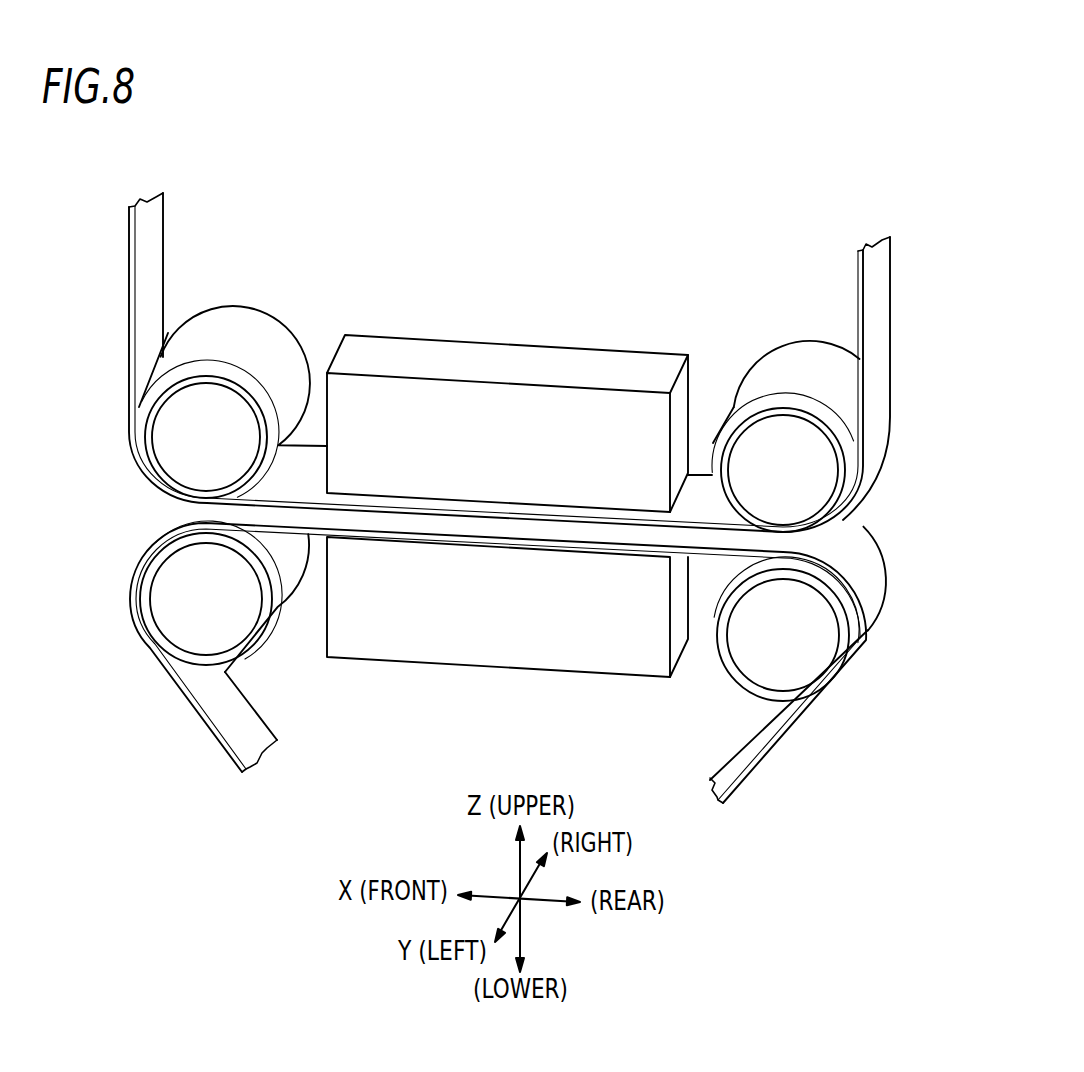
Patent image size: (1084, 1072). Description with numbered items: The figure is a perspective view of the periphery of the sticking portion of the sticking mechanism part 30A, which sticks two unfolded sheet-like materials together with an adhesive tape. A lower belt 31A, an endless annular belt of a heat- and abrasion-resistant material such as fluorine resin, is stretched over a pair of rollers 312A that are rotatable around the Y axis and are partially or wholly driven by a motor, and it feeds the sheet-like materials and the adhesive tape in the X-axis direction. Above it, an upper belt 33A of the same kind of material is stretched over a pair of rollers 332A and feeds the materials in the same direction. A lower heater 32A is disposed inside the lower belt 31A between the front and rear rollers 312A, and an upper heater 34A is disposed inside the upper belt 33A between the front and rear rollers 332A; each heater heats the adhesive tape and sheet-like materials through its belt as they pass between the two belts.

The sticking mechanism part 30A is at (705, 180).
The lower belt 31A is at (200, 712).
The rollers 312A is at (148, 607).
The lower heater 32A is at (506, 667).
The upper belt 33A is at (128, 272).
The rollers 332A is at (148, 414).
The upper heater 34A is at (540, 365).